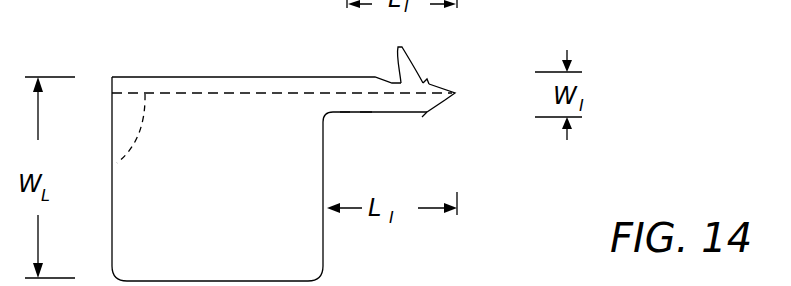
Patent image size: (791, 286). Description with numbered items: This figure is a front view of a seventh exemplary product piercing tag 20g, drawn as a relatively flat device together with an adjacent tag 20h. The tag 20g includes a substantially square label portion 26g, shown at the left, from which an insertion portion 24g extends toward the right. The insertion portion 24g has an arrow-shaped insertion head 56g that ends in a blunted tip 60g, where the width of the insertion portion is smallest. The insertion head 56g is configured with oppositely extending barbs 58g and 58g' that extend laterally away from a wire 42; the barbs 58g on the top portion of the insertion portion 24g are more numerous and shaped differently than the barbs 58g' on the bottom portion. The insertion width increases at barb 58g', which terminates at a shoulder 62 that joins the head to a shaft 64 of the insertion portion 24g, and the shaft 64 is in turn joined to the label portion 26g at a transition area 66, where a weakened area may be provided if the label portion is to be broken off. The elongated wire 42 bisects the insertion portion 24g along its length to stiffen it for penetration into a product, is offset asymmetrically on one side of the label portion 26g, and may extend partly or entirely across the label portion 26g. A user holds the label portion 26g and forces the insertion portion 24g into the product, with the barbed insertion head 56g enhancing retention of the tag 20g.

The tag 20g is at (306, 140).
The attachment 20h is at (511, 272).
The insertion portion 24g is at (373, 103).
The label portion 26g is at (138, 222).
The wire 42 is at (112, 168).
The insertion head 56g is at (432, 107).
The barbs 58g is at (400, 50).
The barbs 58g' is at (451, 129).
The tip 60g is at (456, 93).
The shoulder 62 is at (424, 113).
The shaft 64 is at (358, 100).
The transition area 66 is at (330, 105).